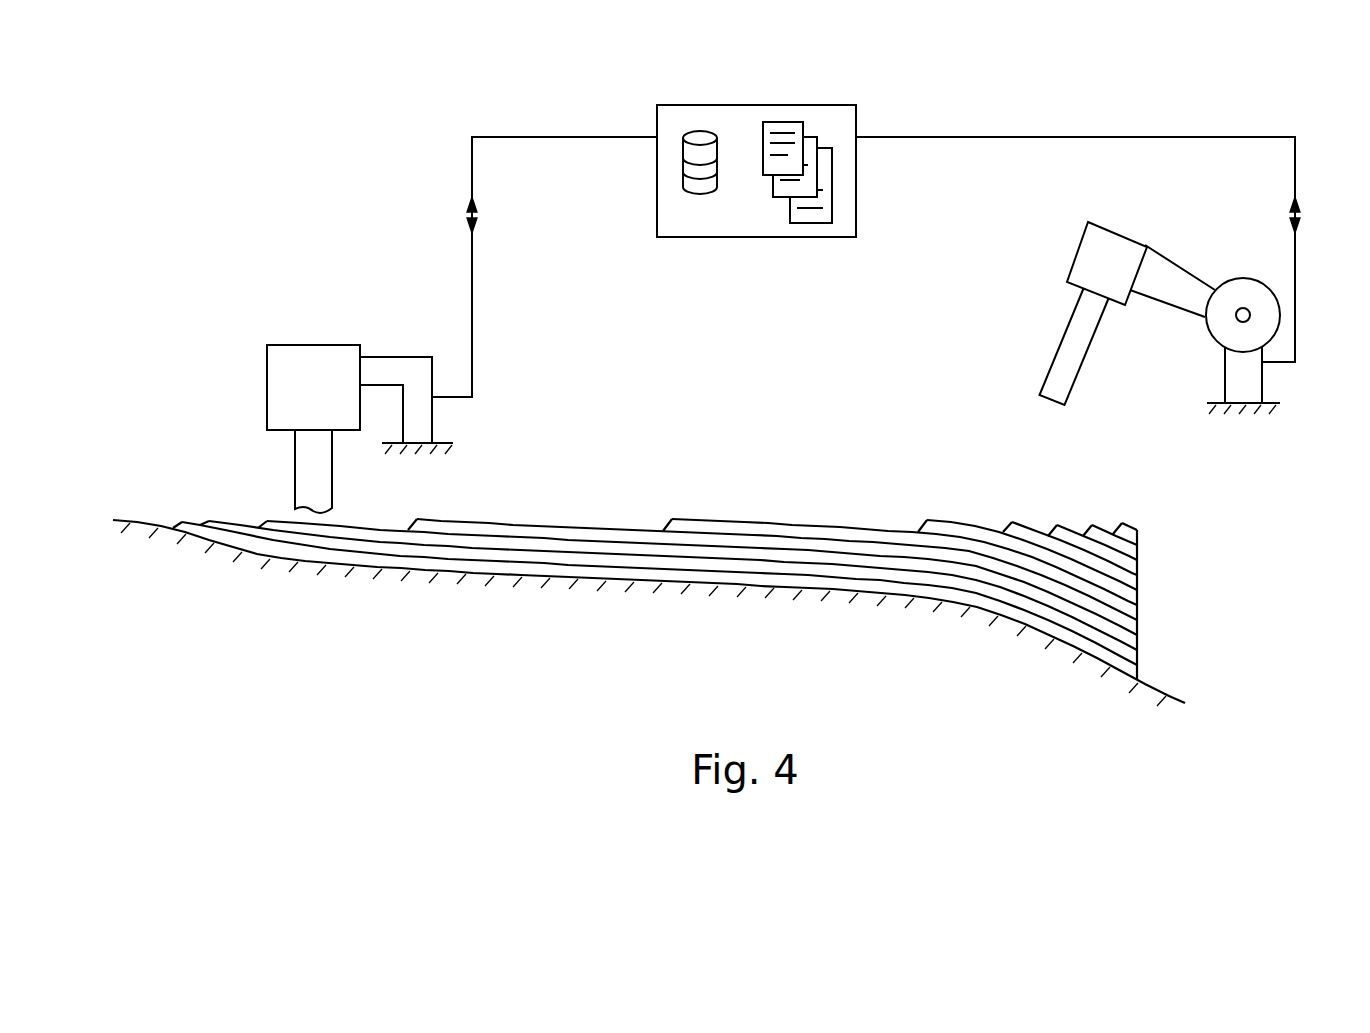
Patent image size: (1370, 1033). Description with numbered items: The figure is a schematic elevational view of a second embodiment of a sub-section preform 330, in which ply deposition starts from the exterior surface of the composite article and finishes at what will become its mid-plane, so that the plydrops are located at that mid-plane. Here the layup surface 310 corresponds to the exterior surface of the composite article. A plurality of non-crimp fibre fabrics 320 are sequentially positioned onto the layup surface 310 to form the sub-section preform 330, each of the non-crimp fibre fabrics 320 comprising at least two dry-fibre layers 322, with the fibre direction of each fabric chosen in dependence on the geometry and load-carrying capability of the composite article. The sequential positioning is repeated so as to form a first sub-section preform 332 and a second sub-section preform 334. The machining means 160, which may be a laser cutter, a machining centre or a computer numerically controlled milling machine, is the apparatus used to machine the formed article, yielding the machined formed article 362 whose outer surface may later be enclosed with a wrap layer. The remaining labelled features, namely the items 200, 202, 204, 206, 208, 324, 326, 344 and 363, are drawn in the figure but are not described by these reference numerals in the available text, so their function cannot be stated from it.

The machining means 160 is at (368, 336).
The controller 200 is at (858, 190).
The data files 202 is at (778, 157).
The database 204 is at (683, 168).
The processor 206 is at (717, 220).
The communication link 208 is at (470, 153).
The layup surface 310 is at (132, 520).
The non-crimp fibre fabrics 320 is at (937, 603).
The dry-fibre layers 322 is at (867, 575).
The third ply 324 is at (677, 563).
The fourth ply 326 is at (777, 572).
The sub-section preform 330 is at (583, 465).
The first sub-section preform 332 is at (612, 482).
The second sub-section preform 334 is at (637, 483).
The ply edge 344 is at (183, 522).
The machined formed article 362 is at (347, 535).
The ply end 363 is at (647, 530).